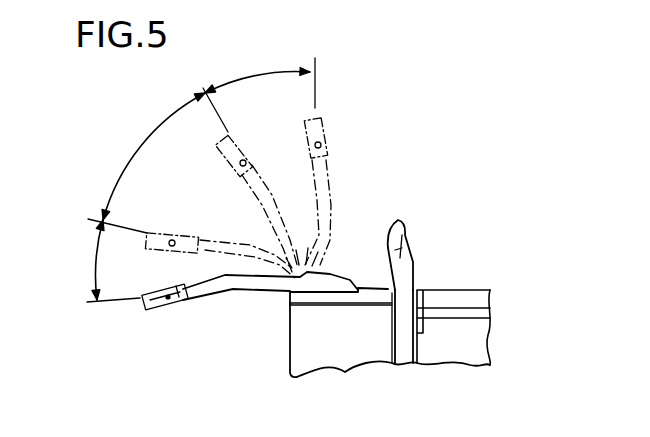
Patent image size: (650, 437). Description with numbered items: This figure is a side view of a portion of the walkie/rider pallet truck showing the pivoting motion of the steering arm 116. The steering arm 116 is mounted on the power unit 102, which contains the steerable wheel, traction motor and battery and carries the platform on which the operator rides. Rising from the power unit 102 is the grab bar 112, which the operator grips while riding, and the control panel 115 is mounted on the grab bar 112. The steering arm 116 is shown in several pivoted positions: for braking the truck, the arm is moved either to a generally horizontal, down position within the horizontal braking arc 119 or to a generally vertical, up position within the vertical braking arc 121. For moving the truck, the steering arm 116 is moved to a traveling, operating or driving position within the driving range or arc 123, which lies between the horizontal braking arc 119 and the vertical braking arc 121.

The power unit 102 is at (282, 344).
The grab bar 112 is at (412, 257).
The control panel 115 is at (400, 224).
The steering arm 116 is at (250, 290).
The horizontal braking arc 119 is at (96, 258).
The vertical braking arc 121 is at (267, 72).
The driving range or arc 123 is at (137, 155).